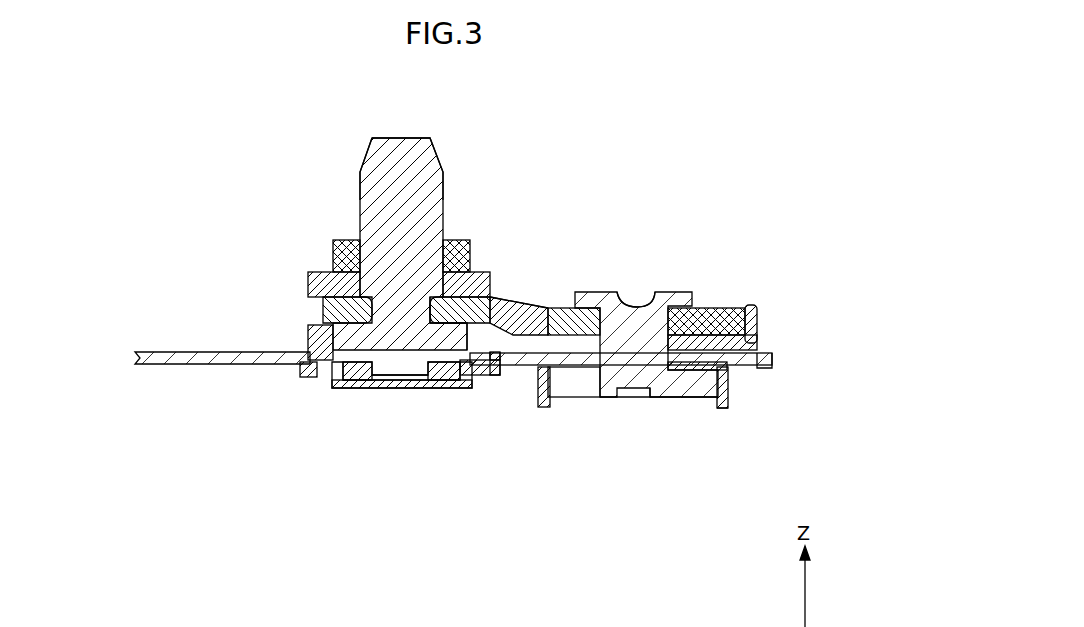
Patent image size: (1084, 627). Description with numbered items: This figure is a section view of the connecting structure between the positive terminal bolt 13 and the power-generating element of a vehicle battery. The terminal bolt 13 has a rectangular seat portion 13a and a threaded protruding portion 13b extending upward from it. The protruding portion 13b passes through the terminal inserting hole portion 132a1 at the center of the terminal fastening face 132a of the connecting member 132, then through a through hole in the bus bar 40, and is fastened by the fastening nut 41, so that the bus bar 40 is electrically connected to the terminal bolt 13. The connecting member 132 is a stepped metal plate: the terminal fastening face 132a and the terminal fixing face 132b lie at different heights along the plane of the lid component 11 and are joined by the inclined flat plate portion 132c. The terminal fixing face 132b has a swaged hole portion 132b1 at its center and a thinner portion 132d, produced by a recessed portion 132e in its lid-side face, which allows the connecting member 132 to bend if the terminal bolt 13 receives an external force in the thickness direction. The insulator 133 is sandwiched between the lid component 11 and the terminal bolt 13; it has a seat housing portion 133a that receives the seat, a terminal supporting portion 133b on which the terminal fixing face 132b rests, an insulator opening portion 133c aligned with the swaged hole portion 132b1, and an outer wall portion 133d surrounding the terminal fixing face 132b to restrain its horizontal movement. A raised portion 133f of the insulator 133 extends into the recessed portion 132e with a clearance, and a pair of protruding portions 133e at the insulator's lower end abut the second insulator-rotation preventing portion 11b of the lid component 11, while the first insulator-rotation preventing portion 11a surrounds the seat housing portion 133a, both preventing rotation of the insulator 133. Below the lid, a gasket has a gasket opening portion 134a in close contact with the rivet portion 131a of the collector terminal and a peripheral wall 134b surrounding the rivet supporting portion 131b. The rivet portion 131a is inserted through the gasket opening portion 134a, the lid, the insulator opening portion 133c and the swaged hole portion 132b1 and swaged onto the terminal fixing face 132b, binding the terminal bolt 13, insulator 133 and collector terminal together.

The lid component 11 is at (190, 366).
The first insulator-rotation preventing portion 11a is at (345, 366).
The second insulator-rotation preventing portion 11b is at (407, 385).
The terminal bolt (positive electrode) 13 is at (462, 212).
The seat portion 13a is at (490, 300).
The protruding portion 13b is at (418, 218).
The bus bar 40 is at (308, 283).
The fastening nut 41 is at (333, 243).
The rivet portion 131a is at (633, 360).
The rivet supporting portion 131b is at (672, 393).
The connecting member (positive electrode) 132 is at (558, 300).
The terminal fastening face 132a is at (323, 313).
The terminal inserting hole portion 132a1 is at (305, 356).
The terminal fixing face 132b is at (757, 340).
The swaged hole portion 132b1 is at (628, 300).
The inclined flat plate portion 132c is at (525, 300).
The thinner portion 132d is at (545, 302).
The recessed portion 132e is at (550, 397).
The insulator 133 is at (770, 328).
The seat housing portion 133a is at (307, 337).
The terminal supporting portion 133b is at (722, 308).
The insulator opening portion 133c is at (732, 362).
The outer wall portion 133d is at (757, 320).
The protruding portions 133e is at (362, 372).
The raised portion 133f is at (510, 380).
The gasket opening portion 134a is at (727, 395).
The peripheral wall 134b is at (730, 405).